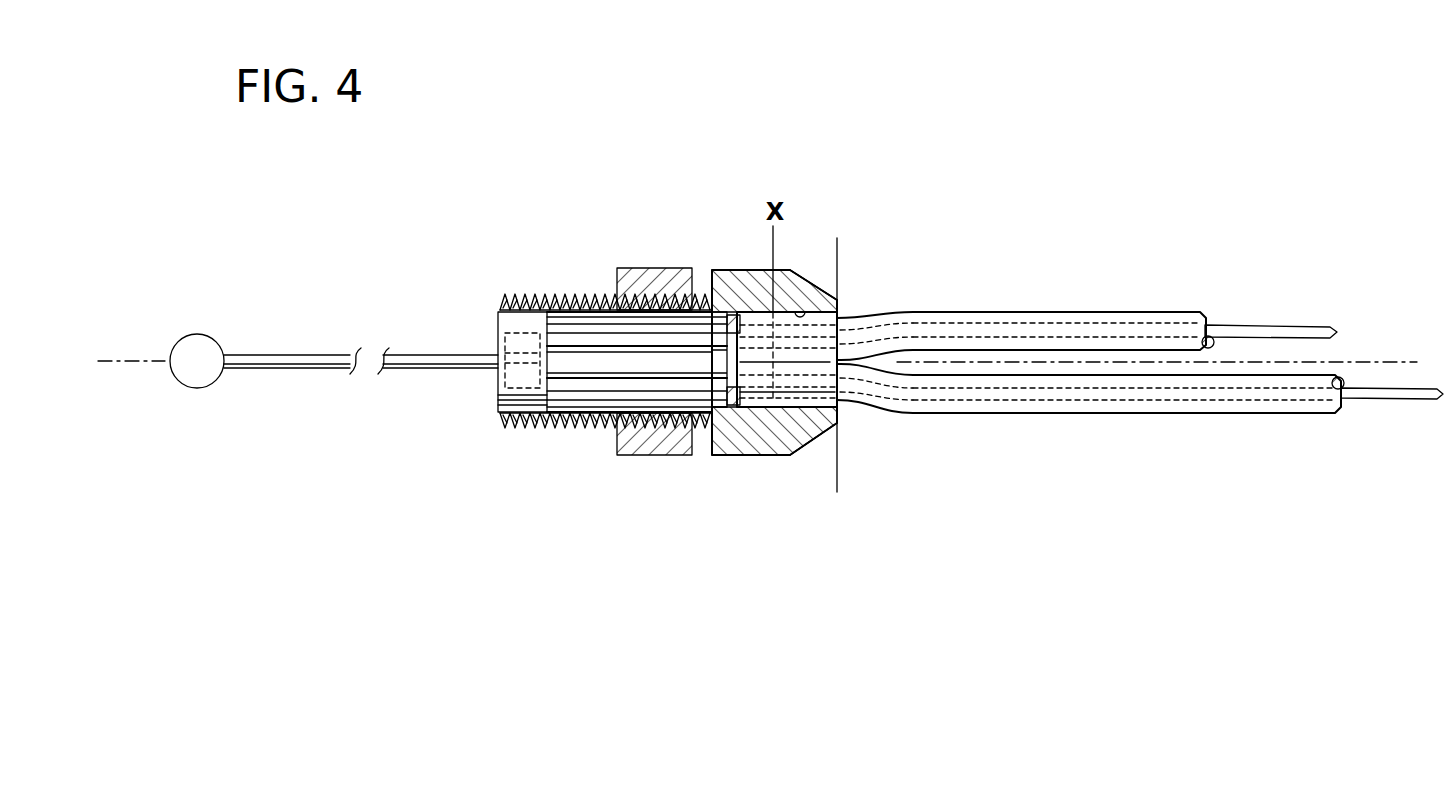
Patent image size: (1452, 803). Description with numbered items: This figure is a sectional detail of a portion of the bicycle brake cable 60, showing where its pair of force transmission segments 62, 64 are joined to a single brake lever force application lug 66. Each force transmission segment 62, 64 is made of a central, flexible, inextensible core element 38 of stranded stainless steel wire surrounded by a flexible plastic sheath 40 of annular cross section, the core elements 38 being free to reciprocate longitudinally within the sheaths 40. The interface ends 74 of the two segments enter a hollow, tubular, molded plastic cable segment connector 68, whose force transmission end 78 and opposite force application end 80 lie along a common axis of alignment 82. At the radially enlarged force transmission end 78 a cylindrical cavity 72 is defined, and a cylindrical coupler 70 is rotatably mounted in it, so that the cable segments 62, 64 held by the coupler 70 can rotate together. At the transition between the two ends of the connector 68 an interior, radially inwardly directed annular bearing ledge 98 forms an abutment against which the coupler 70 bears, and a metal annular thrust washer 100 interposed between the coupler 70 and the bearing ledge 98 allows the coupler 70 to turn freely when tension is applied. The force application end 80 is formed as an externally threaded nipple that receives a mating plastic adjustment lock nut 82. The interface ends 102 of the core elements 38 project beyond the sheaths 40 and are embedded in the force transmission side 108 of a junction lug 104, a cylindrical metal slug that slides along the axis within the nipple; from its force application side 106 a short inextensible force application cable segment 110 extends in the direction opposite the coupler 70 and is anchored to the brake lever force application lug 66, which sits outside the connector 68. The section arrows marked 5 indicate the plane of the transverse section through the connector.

The core element 38 is at (1254, 326).
The sheath 40 is at (1007, 311).
The bicycle brake cable 60 is at (1140, 399).
The force transmission segment 62 is at (1103, 311).
The force transmission segment 64 is at (1138, 412).
The brake lever force application lug 66 is at (195, 346).
The cable segment connector 68 is at (742, 256).
The coupler 70 is at (764, 408).
The cylindrical cavity 72 is at (799, 312).
The interface end 74 is at (887, 318).
The force transmission end 78 is at (838, 302).
The force application end 80 is at (523, 296).
The axis of alignment 82 is at (119, 338).
The bearing ledge 98 is at (738, 394).
The thrust washer 100 is at (731, 302).
The interface end of core element 102 is at (578, 340).
The junction lug 104 is at (514, 421).
The force application side 106 is at (496, 389).
The force transmission side 108 is at (588, 310).
The force application cable segment 110 is at (408, 354).
The section line 5 is at (842, 250).